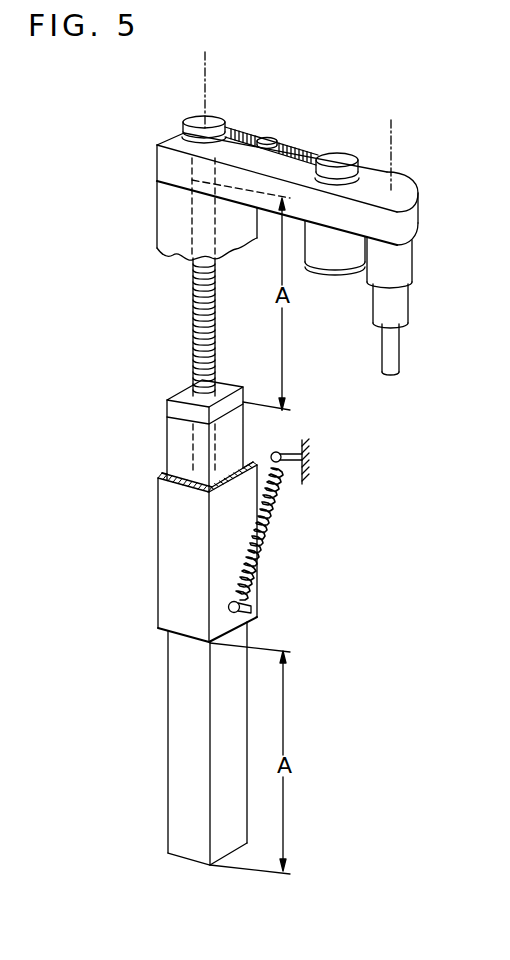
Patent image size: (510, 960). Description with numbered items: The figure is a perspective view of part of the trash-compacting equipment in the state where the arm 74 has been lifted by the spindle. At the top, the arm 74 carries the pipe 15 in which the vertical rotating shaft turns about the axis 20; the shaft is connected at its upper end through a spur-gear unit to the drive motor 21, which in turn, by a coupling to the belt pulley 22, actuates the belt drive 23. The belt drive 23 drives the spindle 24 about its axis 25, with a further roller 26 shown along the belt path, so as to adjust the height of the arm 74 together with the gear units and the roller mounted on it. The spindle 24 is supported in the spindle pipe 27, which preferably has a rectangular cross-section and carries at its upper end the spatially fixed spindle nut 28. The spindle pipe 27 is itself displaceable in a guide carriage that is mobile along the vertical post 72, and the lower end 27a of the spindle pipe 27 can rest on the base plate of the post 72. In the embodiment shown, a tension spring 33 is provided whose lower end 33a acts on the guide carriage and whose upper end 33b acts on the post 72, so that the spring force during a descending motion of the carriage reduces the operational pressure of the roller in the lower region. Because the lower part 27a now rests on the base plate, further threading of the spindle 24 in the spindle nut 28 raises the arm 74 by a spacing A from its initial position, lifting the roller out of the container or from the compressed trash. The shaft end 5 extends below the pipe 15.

The spindle shaft 5 is at (399, 354).
The pipe 15 is at (400, 305).
The axis of the vertical rotating shaft 20 is at (392, 132).
The drive motor 21 is at (338, 260).
The belt pulley 22 is at (336, 157).
The belt drive 23 is at (303, 153).
The spindle 24 is at (196, 326).
The axis of the spindle 25 is at (206, 70).
The idler roller 26 is at (268, 137).
The spindle pipe 27 is at (172, 437).
The lower end of the spindle pipe 27a is at (196, 852).
The spindle nut 28 is at (180, 400).
The tension spring 33 is at (266, 538).
The lower end of the tension spring 33a is at (253, 603).
The upper end of the tension spring 33b is at (283, 472).
The vertical post 72 is at (305, 448).
The arm 74 is at (419, 215).